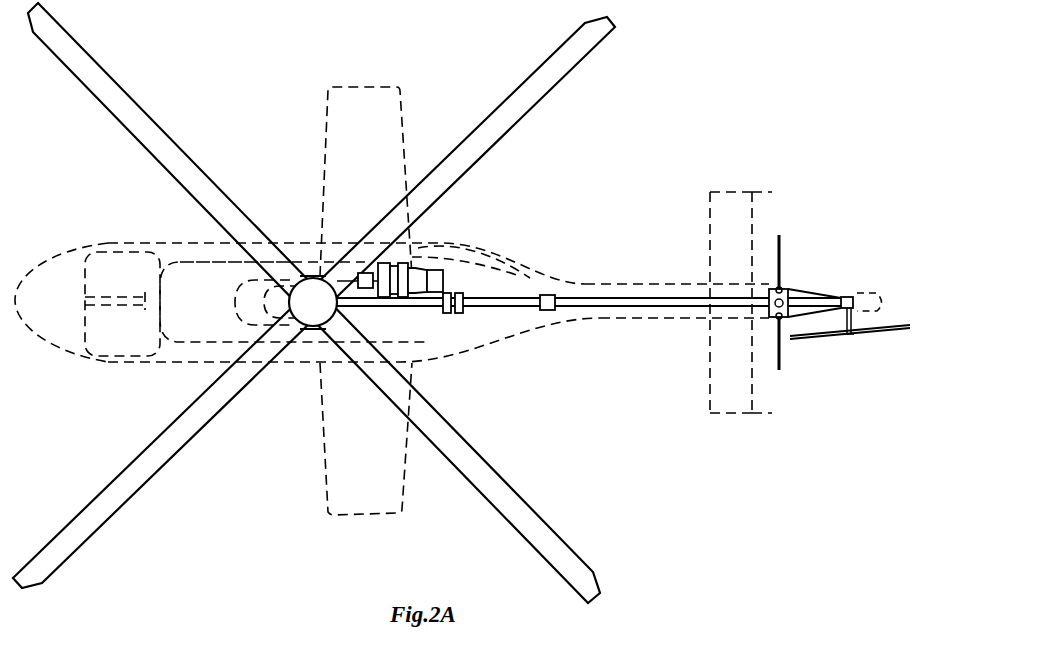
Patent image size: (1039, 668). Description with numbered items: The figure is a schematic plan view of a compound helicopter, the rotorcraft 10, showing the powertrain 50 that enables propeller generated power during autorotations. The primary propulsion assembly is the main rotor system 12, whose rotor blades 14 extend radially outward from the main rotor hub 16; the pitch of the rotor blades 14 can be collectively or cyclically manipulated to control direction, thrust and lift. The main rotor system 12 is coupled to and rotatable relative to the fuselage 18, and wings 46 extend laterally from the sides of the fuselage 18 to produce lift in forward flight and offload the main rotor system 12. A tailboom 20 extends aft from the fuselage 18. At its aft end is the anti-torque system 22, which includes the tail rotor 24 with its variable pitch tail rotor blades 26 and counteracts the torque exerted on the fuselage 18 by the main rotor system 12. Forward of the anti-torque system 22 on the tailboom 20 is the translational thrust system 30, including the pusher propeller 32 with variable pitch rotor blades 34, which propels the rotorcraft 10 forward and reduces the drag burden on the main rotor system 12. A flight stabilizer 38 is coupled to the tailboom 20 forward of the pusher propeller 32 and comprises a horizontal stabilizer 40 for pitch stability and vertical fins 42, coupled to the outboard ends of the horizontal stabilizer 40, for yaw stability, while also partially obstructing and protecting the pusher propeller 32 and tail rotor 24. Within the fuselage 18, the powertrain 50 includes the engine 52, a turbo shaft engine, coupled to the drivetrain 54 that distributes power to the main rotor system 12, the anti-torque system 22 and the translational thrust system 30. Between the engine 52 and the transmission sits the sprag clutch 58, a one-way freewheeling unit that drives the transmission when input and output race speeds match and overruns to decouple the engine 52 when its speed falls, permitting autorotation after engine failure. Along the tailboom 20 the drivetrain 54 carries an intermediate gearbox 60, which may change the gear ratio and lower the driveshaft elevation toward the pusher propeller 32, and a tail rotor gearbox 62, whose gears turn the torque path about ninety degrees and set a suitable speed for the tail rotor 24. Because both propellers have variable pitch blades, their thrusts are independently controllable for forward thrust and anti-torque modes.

The rotorcraft 10 is at (217, 74).
The main rotor system 12 is at (100, 109).
The rotor blades 14 is at (170, 140).
The main rotor hub 16 is at (308, 284).
The fuselage 18 is at (112, 357).
The tailboom 20 is at (634, 322).
The anti-torque system 22 is at (891, 342).
The tail rotor 24 is at (857, 334).
The variable pitch tail rotor blades 26 is at (896, 326).
The translational thrust system 30 is at (786, 240).
The pusher propeller 32 is at (782, 287).
The variable pitch rotor blades 34 is at (782, 356).
The flight stabilizer 38 is at (706, 247).
The horizontal stabilizer 40 is at (708, 212).
The vertical fins 42 is at (730, 190).
The wings 46 is at (322, 472).
The powertrain 50 is at (445, 267).
The engine 52 is at (412, 268).
The drivetrain 54 is at (534, 296).
The sprag clutch 58 is at (361, 272).
The intermediate gearbox 60 is at (548, 311).
The tail rotor gearbox 62 is at (851, 296).